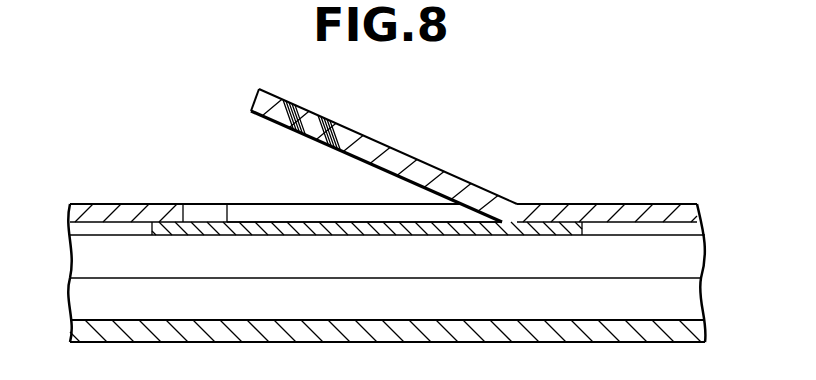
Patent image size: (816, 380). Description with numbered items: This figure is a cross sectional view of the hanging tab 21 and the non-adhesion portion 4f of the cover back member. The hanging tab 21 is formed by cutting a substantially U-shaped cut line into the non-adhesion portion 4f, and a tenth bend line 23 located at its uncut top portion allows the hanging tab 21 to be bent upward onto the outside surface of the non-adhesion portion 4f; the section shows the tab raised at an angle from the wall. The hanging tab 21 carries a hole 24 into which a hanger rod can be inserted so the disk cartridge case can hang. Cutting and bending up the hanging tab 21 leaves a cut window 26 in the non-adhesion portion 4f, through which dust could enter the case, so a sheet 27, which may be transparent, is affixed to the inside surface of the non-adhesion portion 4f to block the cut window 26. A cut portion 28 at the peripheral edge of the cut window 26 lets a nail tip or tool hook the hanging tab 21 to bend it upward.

The non-adhesion portion 4f is at (114, 210).
The cut portion 28 is at (197, 210).
The cut window 26 is at (254, 213).
The sheet 27 is at (311, 219).
The tenth bend line 23 is at (530, 206).
The hanging tab 21 is at (377, 148).
The hole 24 is at (310, 117).